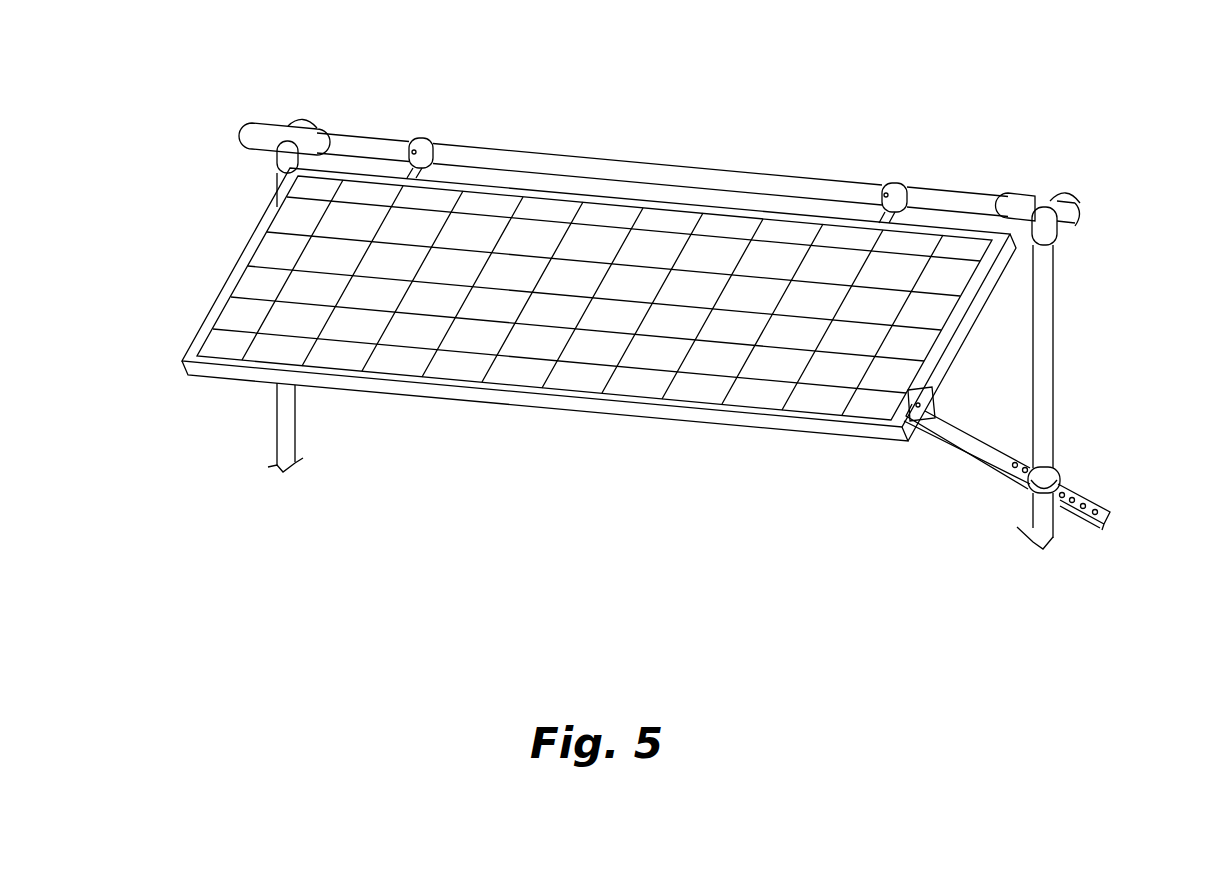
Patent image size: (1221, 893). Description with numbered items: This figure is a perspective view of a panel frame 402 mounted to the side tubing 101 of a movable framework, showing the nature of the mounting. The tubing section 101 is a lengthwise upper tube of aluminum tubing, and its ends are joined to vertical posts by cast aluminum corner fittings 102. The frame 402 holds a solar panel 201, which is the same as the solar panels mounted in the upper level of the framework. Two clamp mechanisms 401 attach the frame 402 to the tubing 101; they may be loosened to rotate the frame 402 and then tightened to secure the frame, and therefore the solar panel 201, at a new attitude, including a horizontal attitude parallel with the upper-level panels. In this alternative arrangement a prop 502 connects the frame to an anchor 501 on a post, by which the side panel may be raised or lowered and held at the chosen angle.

The tubing section 101 is at (717, 170).
The corner fitting 102 is at (288, 128).
The solar panel 201 is at (490, 235).
The clamp mechanism 401 is at (427, 143).
The panel frame 402 is at (798, 426).
The anchor 501 is at (1062, 483).
The prop 502 is at (980, 442).